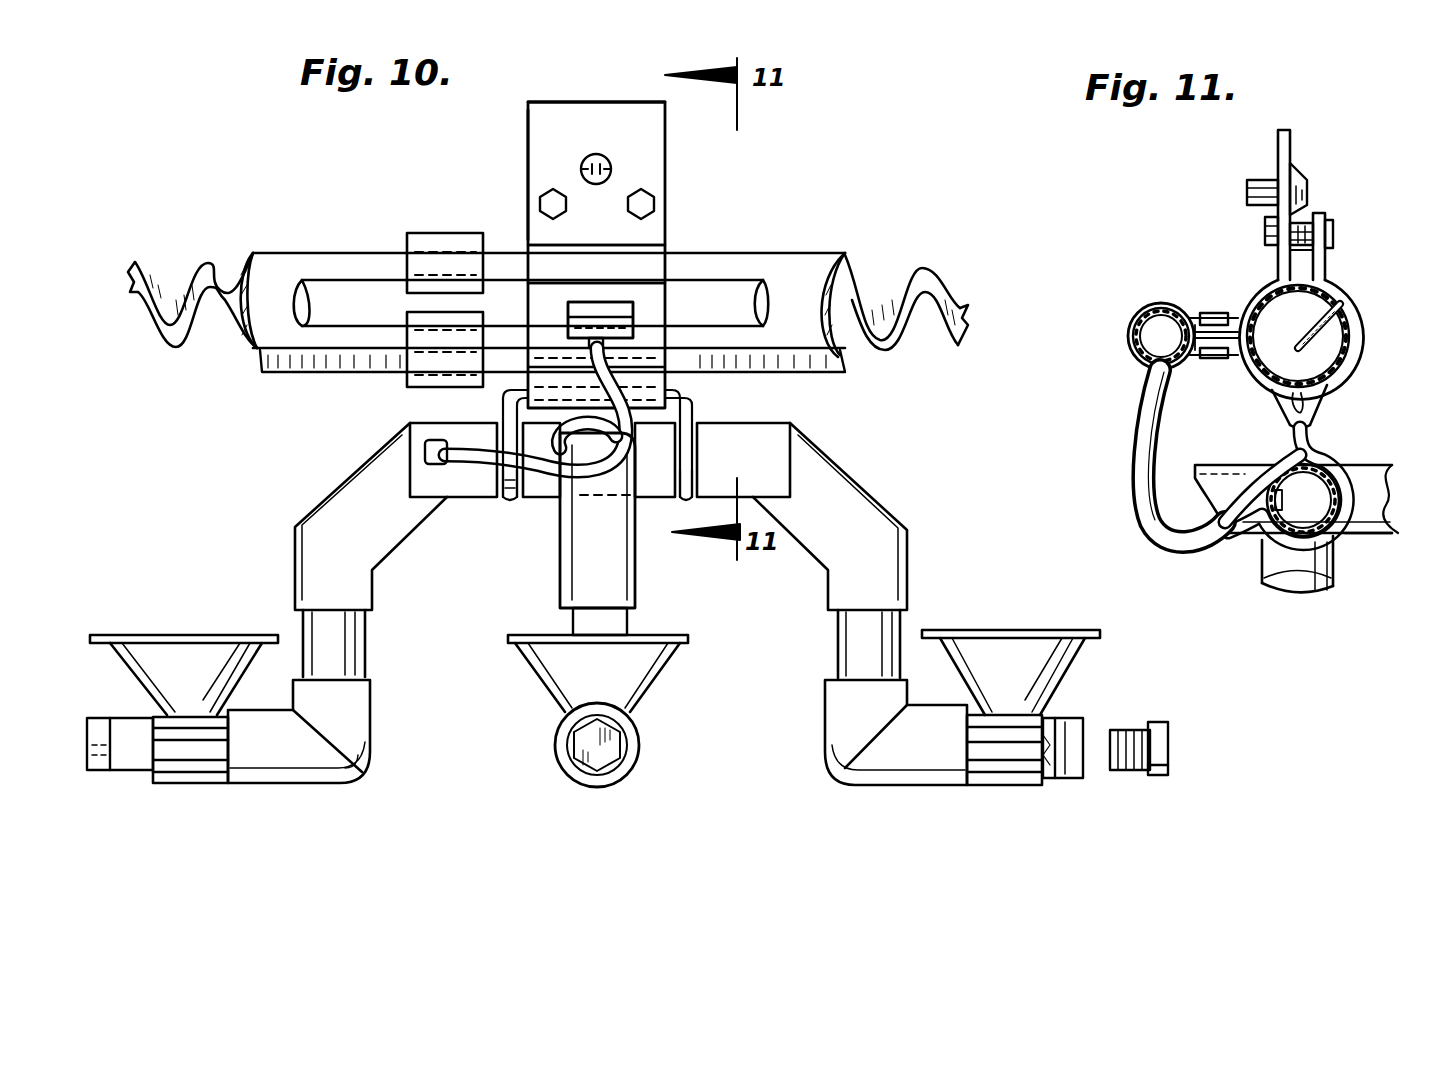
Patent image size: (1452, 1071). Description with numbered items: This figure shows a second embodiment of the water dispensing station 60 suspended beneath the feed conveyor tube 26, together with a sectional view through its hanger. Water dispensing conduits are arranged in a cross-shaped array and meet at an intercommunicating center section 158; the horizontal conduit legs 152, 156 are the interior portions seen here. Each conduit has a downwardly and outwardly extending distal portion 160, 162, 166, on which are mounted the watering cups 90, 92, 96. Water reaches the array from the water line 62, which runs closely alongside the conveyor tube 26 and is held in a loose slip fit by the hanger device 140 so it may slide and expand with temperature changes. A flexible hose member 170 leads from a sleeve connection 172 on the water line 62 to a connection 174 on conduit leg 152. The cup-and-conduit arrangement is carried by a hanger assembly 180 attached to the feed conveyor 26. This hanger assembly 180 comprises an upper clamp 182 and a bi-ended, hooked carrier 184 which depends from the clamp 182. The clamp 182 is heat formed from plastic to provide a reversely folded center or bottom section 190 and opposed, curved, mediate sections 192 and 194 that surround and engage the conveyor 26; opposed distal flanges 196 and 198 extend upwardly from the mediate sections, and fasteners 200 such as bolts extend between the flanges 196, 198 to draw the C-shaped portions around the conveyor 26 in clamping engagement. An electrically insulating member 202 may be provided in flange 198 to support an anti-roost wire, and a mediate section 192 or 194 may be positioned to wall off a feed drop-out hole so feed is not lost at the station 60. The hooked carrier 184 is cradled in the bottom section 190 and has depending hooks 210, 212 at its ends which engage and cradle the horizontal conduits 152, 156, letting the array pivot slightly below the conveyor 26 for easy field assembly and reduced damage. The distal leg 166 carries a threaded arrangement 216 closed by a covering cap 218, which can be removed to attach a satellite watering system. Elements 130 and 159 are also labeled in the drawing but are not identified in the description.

In FIG. 10, the feed conveyor tube 26 is at (328, 265).
In FIG. 11, the feed conveyor tube 26 is at (1350, 336).
In FIG. 10, the water dispensing station 60 is at (810, 210).
In FIG. 10, the water line 62 is at (378, 312).
In FIG. 11, the water line 62 is at (1137, 358).
In FIG. 10, the watering cup 90 is at (652, 660).
In FIG. 10, the watering cup 92 is at (175, 648).
In FIG. 10, the watering cup 96 is at (1028, 648).
In FIG. 10, the bracket 130 is at (552, 383).
In FIG. 10, the hanger device 140 is at (458, 245).
In FIG. 11, the hanger device 140 is at (1165, 302).
In FIG. 10, the water dispensing conduit 152 is at (478, 488).
In FIG. 11, the water dispensing conduit 152 is at (1228, 447).
In FIG. 10, the water dispensing conduit 156 is at (815, 515).
In FIG. 11, the water dispensing conduit 156 is at (1322, 468).
In FIG. 10, the intercommunicating center section 158 is at (542, 490).
In FIG. 11, the plate 159 is at (1362, 533).
In FIG. 10, the distal portion 160 is at (618, 570).
In FIG. 10, the distal portion 162 is at (350, 645).
In FIG. 11, the distal portion 162 is at (1332, 570).
In FIG. 10, the distal leg 166 is at (898, 632).
In FIG. 10, the flexible hose member 170 is at (458, 448).
In FIG. 11, the flexible hose member 170 is at (1148, 540).
In FIG. 10, the sleeve connection 172 is at (615, 310).
In FIG. 10, the connection 174 is at (432, 448).
In FIG. 10, the hanger assembly 180 is at (510, 126).
In FIG. 11, the hanger assembly 180 is at (1365, 286).
In FIG. 10, the upper clamp 182 is at (520, 152).
In FIG. 11, the upper clamp 182 is at (1334, 264).
In FIG. 10, the hooked carrier 184 is at (690, 398).
In FIG. 11, the hooked carrier 184 is at (1312, 450).
In FIG. 11, the center section 190 is at (1325, 410).
In FIG. 11, the mediate section 192 is at (1352, 357).
In FIG. 10, the mediate section 194 is at (605, 276).
In FIG. 11, the mediate section 194 is at (1250, 372).
In FIG. 11, the distal flange 196 is at (1320, 214).
In FIG. 10, the distal flange 198 is at (652, 132).
In FIG. 11, the distal flange 198 is at (1276, 150).
In FIG. 10, the fasteners 200 is at (648, 200).
In FIG. 11, the fasteners 200 is at (1265, 237).
In FIG. 10, the electrically insulating member 202 is at (650, 318).
In FIG. 11, the electrically insulating member 202 is at (1308, 186).
In FIG. 10, the depending hook 210 is at (508, 500).
In FIG. 10, the depending hook 212 is at (692, 460).
In FIG. 11, the depending hook 212 is at (1352, 505).
In FIG. 10, the threaded arrangement 216 is at (1068, 788).
In FIG. 10, the covering cap 218 is at (1160, 778).